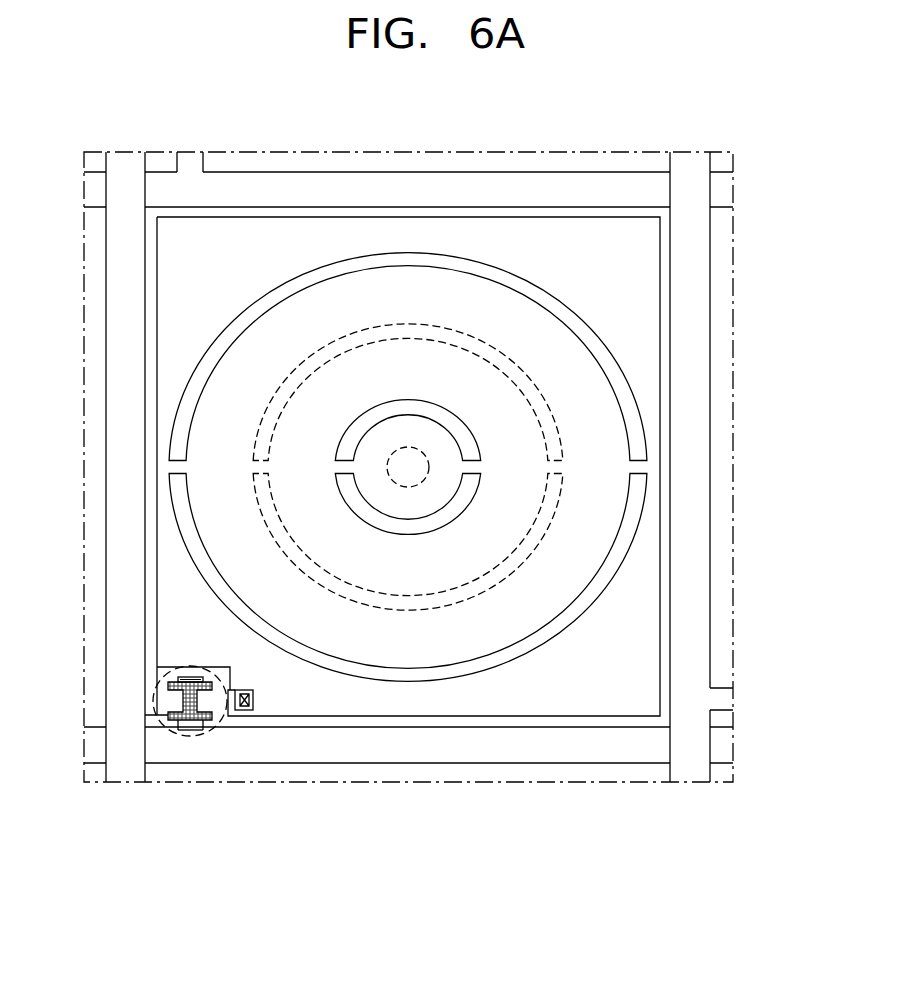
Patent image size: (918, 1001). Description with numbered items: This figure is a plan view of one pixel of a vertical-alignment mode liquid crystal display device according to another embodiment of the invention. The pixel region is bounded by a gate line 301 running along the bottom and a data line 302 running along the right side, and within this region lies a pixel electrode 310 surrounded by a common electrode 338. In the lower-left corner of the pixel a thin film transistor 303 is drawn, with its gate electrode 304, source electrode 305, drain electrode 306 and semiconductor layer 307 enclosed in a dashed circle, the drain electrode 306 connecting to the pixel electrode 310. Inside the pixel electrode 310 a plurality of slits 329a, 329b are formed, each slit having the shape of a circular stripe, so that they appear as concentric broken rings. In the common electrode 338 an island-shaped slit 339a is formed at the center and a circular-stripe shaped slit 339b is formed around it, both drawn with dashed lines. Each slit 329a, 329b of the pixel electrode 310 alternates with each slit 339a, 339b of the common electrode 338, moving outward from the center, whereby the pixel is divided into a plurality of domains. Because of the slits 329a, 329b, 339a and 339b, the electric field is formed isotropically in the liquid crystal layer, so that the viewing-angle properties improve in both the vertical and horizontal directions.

The gate line 301 is at (560, 745).
The data line 302 is at (692, 653).
The thin film transistor 303 is at (195, 734).
The gate electrode 304 is at (188, 722).
The source electrode 305 is at (212, 723).
The drain electrode 306 is at (165, 705).
The semiconductor layer 307 is at (207, 703).
The pixel electrode 310 is at (660, 297).
The slit 329a is at (440, 415).
The slit 329b is at (628, 412).
The common electrode 338 is at (665, 257).
The island-shaped slit 339a is at (413, 467).
The circular-stripe shaped slit 339b is at (540, 528).